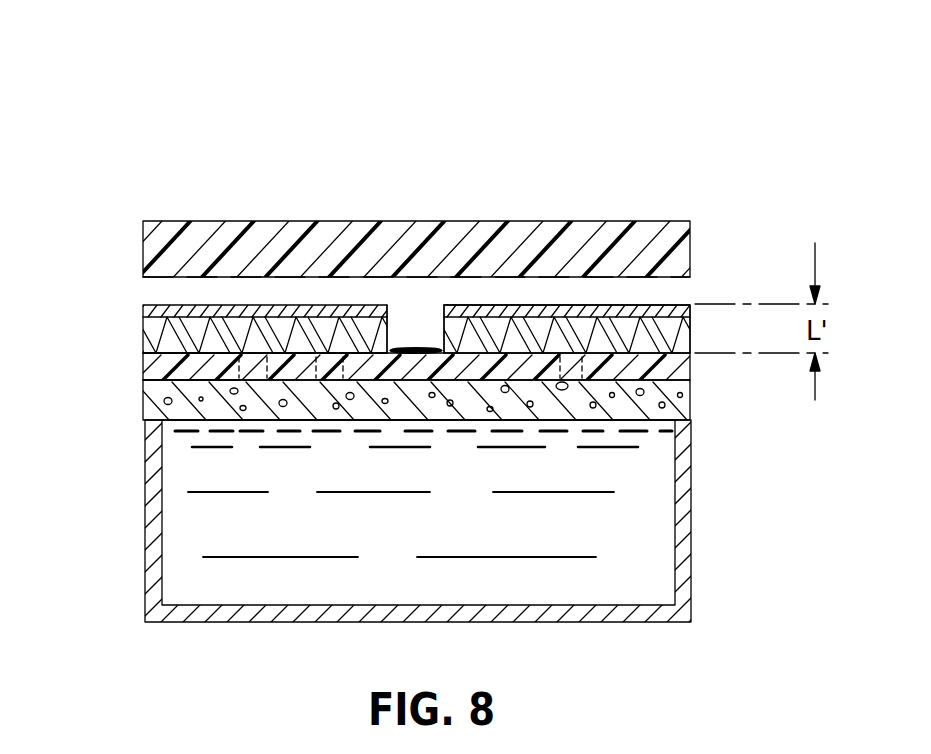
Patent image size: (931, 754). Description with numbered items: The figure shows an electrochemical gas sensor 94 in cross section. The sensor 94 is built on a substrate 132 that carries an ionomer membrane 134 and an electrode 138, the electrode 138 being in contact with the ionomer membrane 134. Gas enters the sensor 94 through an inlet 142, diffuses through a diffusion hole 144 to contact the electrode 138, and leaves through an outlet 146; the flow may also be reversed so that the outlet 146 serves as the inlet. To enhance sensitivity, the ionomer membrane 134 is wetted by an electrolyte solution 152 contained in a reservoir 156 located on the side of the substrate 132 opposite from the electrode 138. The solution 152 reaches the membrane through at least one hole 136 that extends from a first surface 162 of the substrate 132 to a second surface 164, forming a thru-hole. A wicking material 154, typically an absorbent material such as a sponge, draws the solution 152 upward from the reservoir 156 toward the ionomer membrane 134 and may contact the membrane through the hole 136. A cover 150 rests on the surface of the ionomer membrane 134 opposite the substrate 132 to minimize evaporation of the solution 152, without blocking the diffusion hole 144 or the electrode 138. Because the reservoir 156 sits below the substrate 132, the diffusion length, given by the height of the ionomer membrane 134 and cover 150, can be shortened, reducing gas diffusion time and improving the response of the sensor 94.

The electrochemical gas sensor 94 is at (450, 128).
The inlet 142 is at (150, 298).
The ionomer membrane 134 is at (143, 330).
The cover 150 is at (284, 303).
The outlet 146 is at (676, 302).
The diffusion hole 144 is at (417, 336).
The electrode 138 is at (410, 353).
The first surface 162 is at (202, 351).
The substrate 132 is at (143, 366).
The hole 136 is at (328, 352).
The wicking material 154 is at (693, 397).
The second surface 164 is at (165, 383).
The reservoir 156 is at (693, 579).
The solution 152 is at (653, 475).